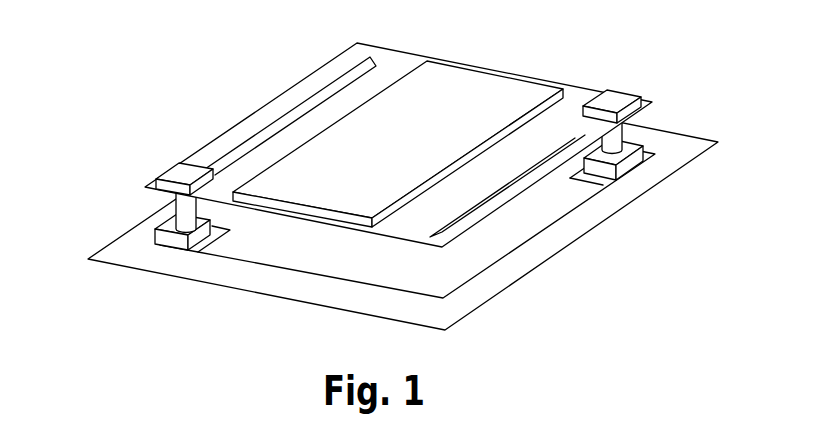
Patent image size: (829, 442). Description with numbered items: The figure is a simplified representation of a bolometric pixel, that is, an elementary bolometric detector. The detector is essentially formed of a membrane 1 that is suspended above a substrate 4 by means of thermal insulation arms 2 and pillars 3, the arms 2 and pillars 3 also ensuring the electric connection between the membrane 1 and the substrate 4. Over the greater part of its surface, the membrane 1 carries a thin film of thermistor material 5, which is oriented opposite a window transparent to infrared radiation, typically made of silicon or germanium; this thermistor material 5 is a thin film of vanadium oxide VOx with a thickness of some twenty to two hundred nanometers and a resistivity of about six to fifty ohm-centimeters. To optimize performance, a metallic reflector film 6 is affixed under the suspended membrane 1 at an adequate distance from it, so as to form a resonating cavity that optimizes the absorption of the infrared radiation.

The membrane 1 is at (497, 160).
The thermal insulation arms 2 is at (245, 127).
The pillars 3 is at (168, 236).
The substrate 4 is at (263, 277).
The thermistor material 5 is at (482, 92).
The metallic reflector film 6 is at (522, 230).